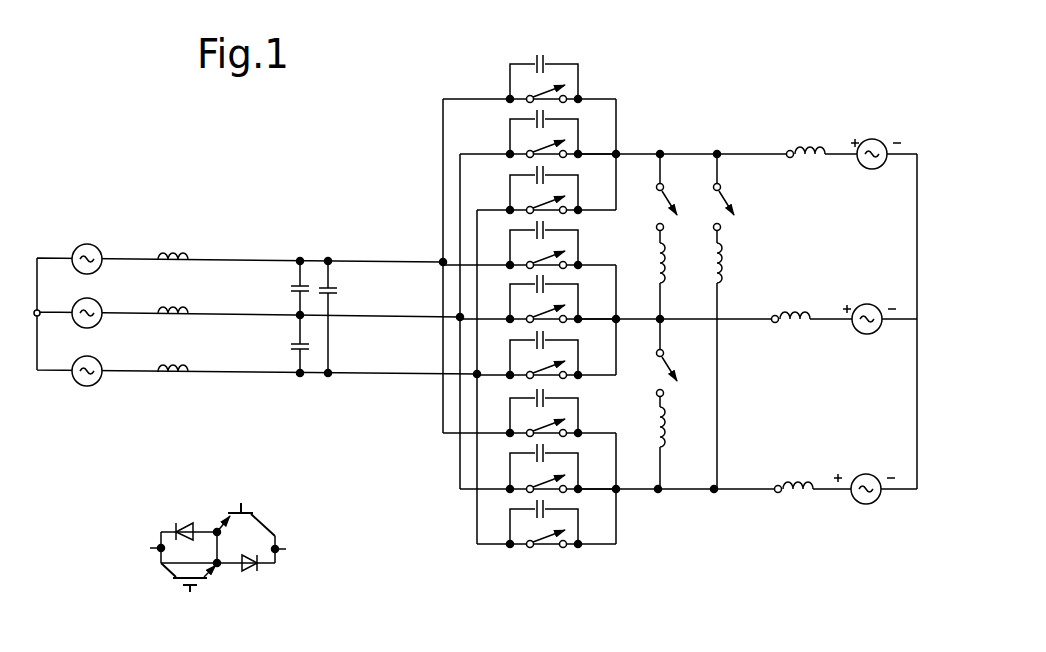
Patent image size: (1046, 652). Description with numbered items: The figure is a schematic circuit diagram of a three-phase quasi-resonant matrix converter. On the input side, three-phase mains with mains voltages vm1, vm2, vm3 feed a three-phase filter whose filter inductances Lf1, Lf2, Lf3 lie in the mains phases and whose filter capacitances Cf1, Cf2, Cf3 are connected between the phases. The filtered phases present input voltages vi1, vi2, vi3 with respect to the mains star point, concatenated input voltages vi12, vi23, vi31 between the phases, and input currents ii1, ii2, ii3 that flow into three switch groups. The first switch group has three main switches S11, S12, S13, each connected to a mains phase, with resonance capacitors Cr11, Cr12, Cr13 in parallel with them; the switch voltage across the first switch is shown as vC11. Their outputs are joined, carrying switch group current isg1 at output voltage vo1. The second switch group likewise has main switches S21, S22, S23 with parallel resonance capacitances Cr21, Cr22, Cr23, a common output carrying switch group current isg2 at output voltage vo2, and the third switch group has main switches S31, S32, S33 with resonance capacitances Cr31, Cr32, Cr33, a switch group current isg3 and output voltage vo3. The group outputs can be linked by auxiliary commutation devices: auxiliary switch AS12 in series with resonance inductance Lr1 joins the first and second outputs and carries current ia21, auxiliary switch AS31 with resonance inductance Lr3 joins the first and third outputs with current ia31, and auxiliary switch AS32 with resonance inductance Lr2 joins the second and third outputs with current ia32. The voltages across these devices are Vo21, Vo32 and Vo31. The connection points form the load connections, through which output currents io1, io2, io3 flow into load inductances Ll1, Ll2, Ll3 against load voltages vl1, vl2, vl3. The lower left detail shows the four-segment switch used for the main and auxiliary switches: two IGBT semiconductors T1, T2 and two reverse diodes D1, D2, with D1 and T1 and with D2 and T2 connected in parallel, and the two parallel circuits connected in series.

The mains voltage vm1 is at (116, 239).
The mains voltage vm2 is at (116, 297).
The mains voltage vm3 is at (116, 354).
The filter inductance Lf1 is at (172, 237).
The filter inductance Lf2 is at (172, 292).
The filter inductance Lf3 is at (172, 349).
The filter capacitance Cf1 is at (284, 288).
The filter capacitance Cf2 is at (283, 344).
The filter capacitance Cf3 is at (342, 317).
The input voltage vi1 is at (314, 246).
The input voltage vi2 is at (283, 305).
The input voltage vi3 is at (315, 390).
The concatenated input voltage vi12 is at (253, 285).
The concatenated input voltage vi23 is at (253, 341).
The concatenated input voltage vi31 is at (383, 284).
The input current ii1 is at (426, 262).
The input current ii2 is at (426, 317).
The input current ii3 is at (426, 374).
The switch voltage vC11 is at (585, 45).
The resonance capacitor Cr11 is at (520, 74).
The resonance capacitor Cr12 is at (520, 129).
The resonance capacitor Cr13 is at (520, 185).
The resonance capacitance Cr21 is at (532, 224).
The resonance capacitance Cr22 is at (532, 280).
The resonance capacitance Cr23 is at (530, 338).
The resonance capacitance Cr31 is at (487, 392).
The resonance capacitance Cr32 is at (482, 447).
The resonance capacitance Cr33 is at (530, 500).
The main switch S11 is at (529, 87).
The main switch S12 is at (538, 142).
The main switch S13 is at (546, 198).
The main switch S21 is at (529, 253).
The main switch S22 is at (538, 307).
The main switch S23 is at (546, 363).
The main switch S31 is at (529, 421).
The main switch S32 is at (538, 477).
The main switch S33 is at (546, 532).
The switch group current isg1 is at (648, 154).
The switch group current isg2 is at (648, 319).
The switch group current isg3 is at (648, 489).
The output voltage vo1 is at (679, 142).
The output voltage vo2 is at (678, 305).
The output voltage vo3 is at (682, 507).
The output current io1 is at (762, 154).
The output current io2 is at (758, 319).
The output current io3 is at (756, 489).
The load inductance Ll1 is at (800, 136).
The load inductance Ll2 is at (787, 301).
The load inductance Ll3 is at (793, 471).
The load voltage vl1 is at (876, 142).
The load voltage vl2 is at (869, 309).
The load voltage vl3 is at (864, 478).
The auxiliary switch AS12 is at (641, 203).
The auxiliary switch AS31 is at (756, 163).
The auxiliary switch AS32 is at (638, 372).
The resonance inductance Lr1 is at (681, 277).
The resonance inductance Lr2 is at (680, 447).
The resonance inductance Lr3 is at (738, 362).
The auxiliary commutation device current ia21 is at (660, 164).
The auxiliary commutation device current ia31 is at (717, 347).
The auxiliary commutation device current ia32 is at (660, 462).
The auxiliary commutation device voltage Vo21 is at (700, 178).
The auxiliary commutation device voltage Vo31 is at (765, 195).
The auxiliary commutation device voltage Vo32 is at (690, 478).
The reverse diode D1 is at (185, 513).
The reverse diode D2 is at (254, 587).
The IGBT semiconductor T1 is at (188, 593).
The IGBT semiconductor T2 is at (246, 505).